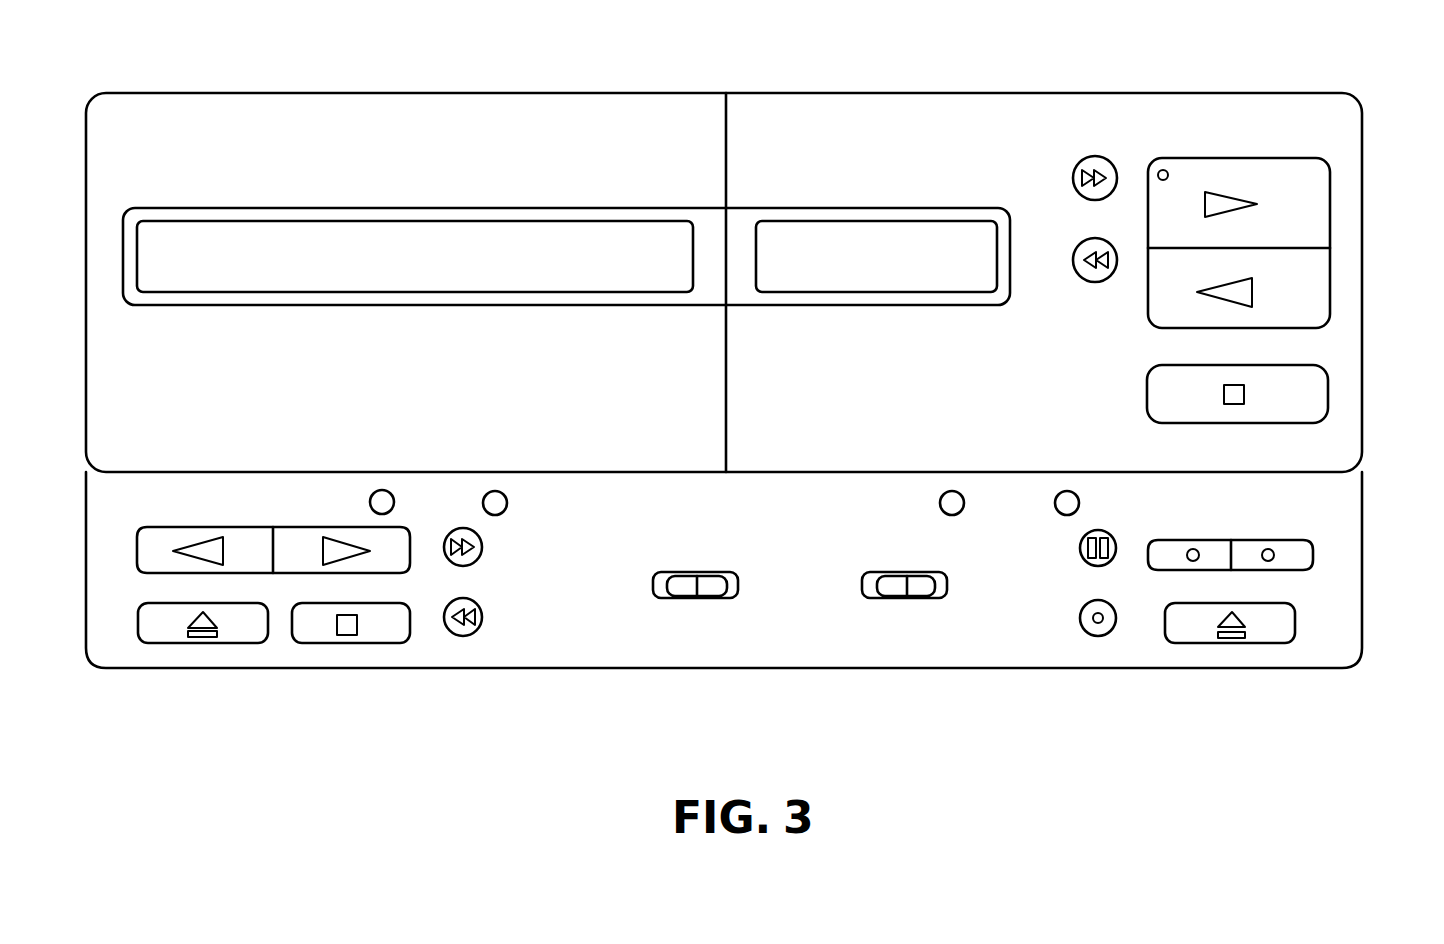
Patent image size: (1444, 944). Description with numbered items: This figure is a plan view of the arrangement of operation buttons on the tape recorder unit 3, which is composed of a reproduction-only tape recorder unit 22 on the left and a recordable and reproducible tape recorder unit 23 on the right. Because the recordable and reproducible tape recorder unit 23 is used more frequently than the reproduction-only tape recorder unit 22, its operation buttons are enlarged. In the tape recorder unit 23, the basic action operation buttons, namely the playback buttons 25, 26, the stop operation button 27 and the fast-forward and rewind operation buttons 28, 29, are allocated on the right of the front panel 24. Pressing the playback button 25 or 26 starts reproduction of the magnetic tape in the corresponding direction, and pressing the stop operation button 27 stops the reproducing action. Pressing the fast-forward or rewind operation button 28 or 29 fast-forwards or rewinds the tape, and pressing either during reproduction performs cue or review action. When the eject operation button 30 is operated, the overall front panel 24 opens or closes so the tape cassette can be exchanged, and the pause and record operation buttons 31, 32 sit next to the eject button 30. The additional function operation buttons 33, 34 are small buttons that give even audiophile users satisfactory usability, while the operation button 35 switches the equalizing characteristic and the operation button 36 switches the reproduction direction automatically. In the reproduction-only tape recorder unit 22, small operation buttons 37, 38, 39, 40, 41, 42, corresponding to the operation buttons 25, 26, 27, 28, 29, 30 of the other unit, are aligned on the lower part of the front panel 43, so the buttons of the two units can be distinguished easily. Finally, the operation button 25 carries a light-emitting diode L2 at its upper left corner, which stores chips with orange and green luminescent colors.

The tape recorder unit 3 is at (1165, 688).
The reproduction-only tape recorder unit 22 is at (565, 86).
The recordable and reproducible tape recorder unit 23 is at (860, 86).
The front panel 24 is at (1030, 125).
The playback button 25 is at (1330, 193).
The playback button 26 is at (1330, 287).
The stop operation button 27 is at (1147, 397).
The fast-forward operation button 28 is at (1073, 177).
The rewind operation button 29 is at (1080, 282).
The eject operation button 30 is at (1272, 645).
The pause operation button 31 is at (1078, 548).
The record operation button 32 is at (1078, 618).
The additional function operation button 33 is at (1200, 540).
The additional function operation button 34 is at (1290, 540).
The operation button 35 is at (917, 598).
The operation button 36 is at (697, 598).
The operation button 37 is at (313, 527).
The operation button 38 is at (205, 527).
The operation button 39 is at (385, 645).
The operation button 40 is at (484, 548).
The operation button 41 is at (484, 620).
The operation button 42 is at (240, 645).
The front panel 43 is at (290, 112).
The light-emitting diode L2 is at (1163, 170).